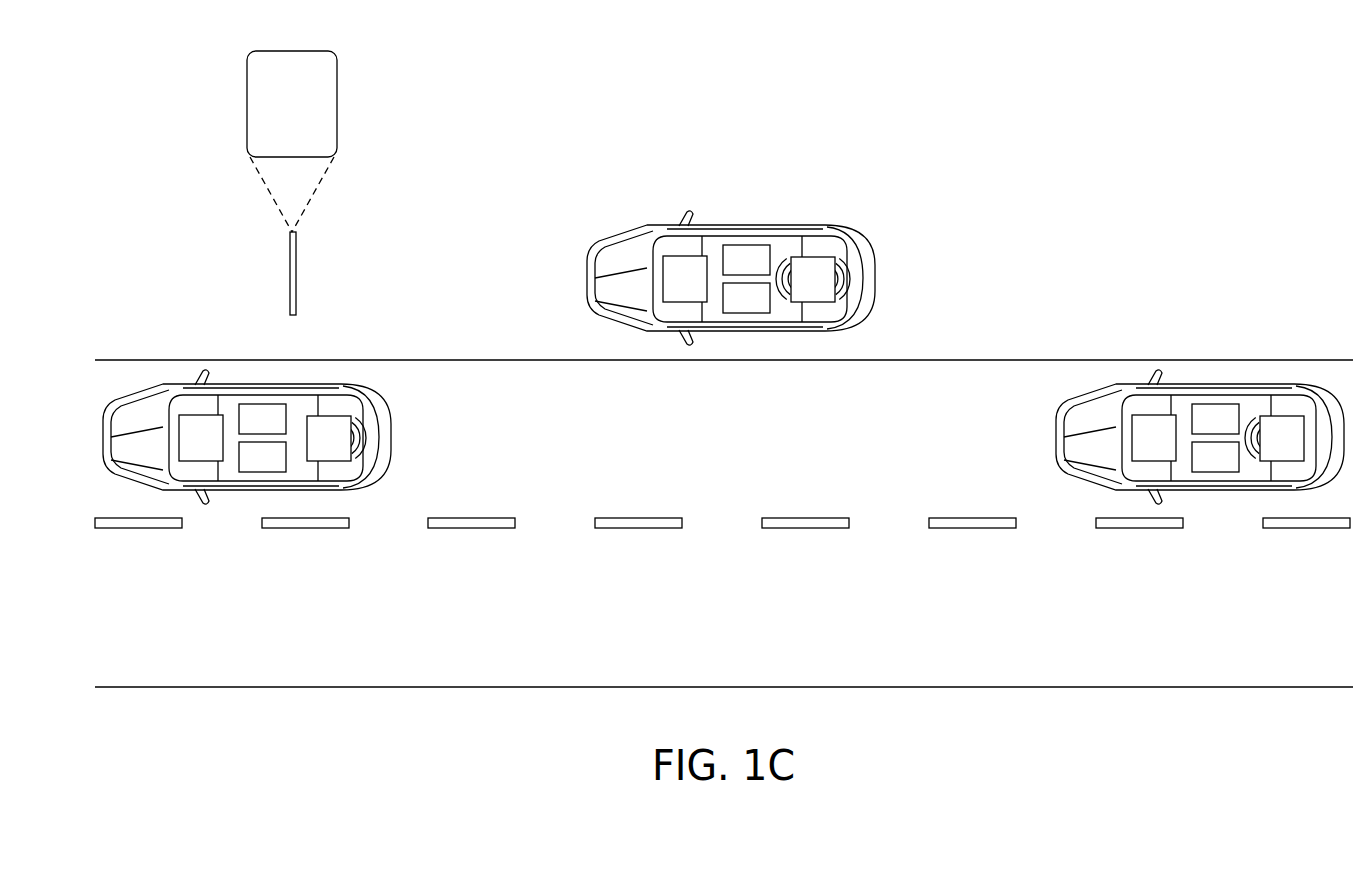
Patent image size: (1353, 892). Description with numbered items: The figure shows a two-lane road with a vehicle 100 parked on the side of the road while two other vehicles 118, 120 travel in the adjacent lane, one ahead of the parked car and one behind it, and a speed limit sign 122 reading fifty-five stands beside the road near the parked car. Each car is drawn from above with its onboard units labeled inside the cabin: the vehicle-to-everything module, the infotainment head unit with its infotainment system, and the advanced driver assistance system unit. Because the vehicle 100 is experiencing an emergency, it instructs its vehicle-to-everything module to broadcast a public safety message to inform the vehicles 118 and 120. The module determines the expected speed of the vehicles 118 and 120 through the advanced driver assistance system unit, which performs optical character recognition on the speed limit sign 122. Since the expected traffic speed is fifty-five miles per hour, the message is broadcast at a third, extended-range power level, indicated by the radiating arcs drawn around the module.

The vehicle 100 is at (845, 228).
The vehicle 118 is at (360, 385).
The vehicle 120 is at (1312, 385).
The speed limit sign 122 is at (290, 260).